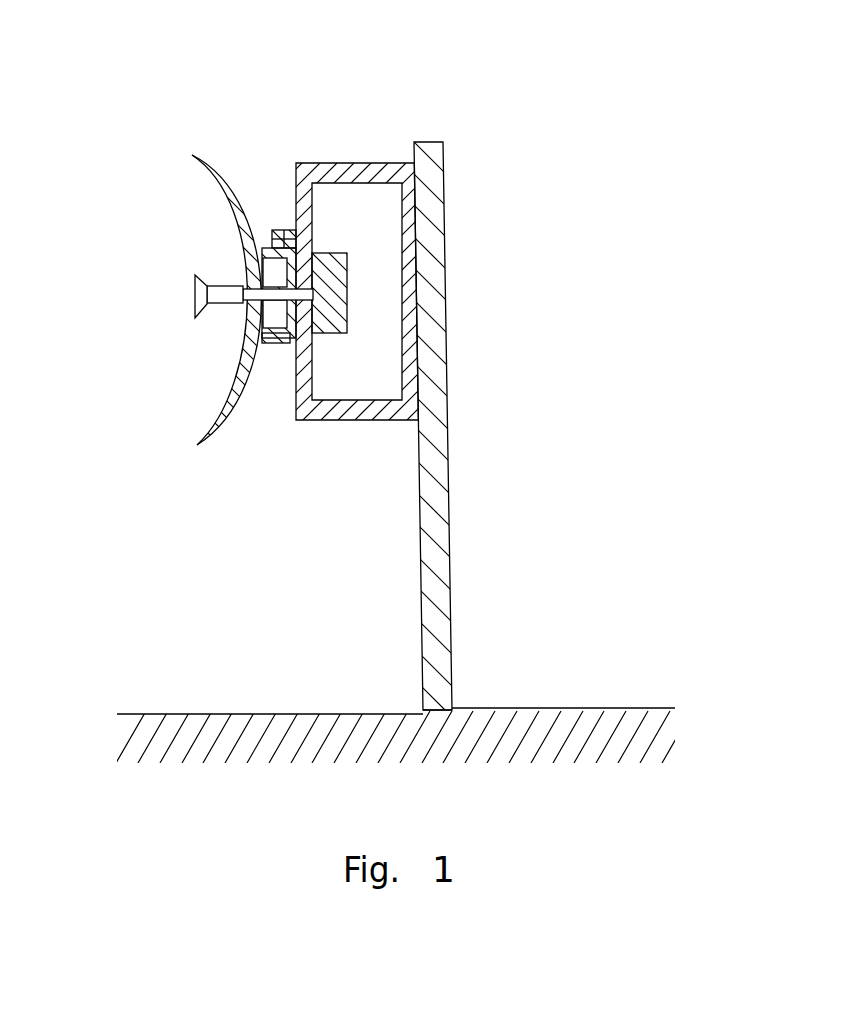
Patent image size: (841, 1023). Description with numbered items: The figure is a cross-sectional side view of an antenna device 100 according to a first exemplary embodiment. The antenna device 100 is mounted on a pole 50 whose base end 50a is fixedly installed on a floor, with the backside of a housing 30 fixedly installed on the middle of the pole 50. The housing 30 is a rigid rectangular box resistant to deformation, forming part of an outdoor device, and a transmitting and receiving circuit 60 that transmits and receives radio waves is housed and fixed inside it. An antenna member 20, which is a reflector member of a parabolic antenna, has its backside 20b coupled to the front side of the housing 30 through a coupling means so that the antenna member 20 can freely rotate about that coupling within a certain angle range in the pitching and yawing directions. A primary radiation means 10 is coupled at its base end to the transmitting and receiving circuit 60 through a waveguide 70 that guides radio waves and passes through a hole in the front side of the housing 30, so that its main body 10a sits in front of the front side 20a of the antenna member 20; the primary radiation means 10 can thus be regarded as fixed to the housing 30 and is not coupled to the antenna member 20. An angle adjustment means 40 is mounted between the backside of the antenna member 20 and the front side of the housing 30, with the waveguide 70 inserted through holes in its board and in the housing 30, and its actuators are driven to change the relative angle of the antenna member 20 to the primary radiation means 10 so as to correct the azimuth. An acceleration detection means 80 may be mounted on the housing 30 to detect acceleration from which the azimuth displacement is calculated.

The antenna device 100 is at (178, 511).
The primary radiation means 10 is at (195, 298).
The main body 10a is at (228, 297).
The antenna member 20 is at (235, 225).
The front side 20a is at (268, 246).
The backside 20b is at (243, 397).
The housing 30 is at (360, 178).
The angle adjustment means 40 is at (264, 250).
The pole 50 is at (430, 247).
The base end 50a is at (453, 707).
The transmitting and receiving circuit 60 is at (336, 330).
The waveguide 70 is at (270, 348).
The acceleration detection means 80 is at (283, 231).